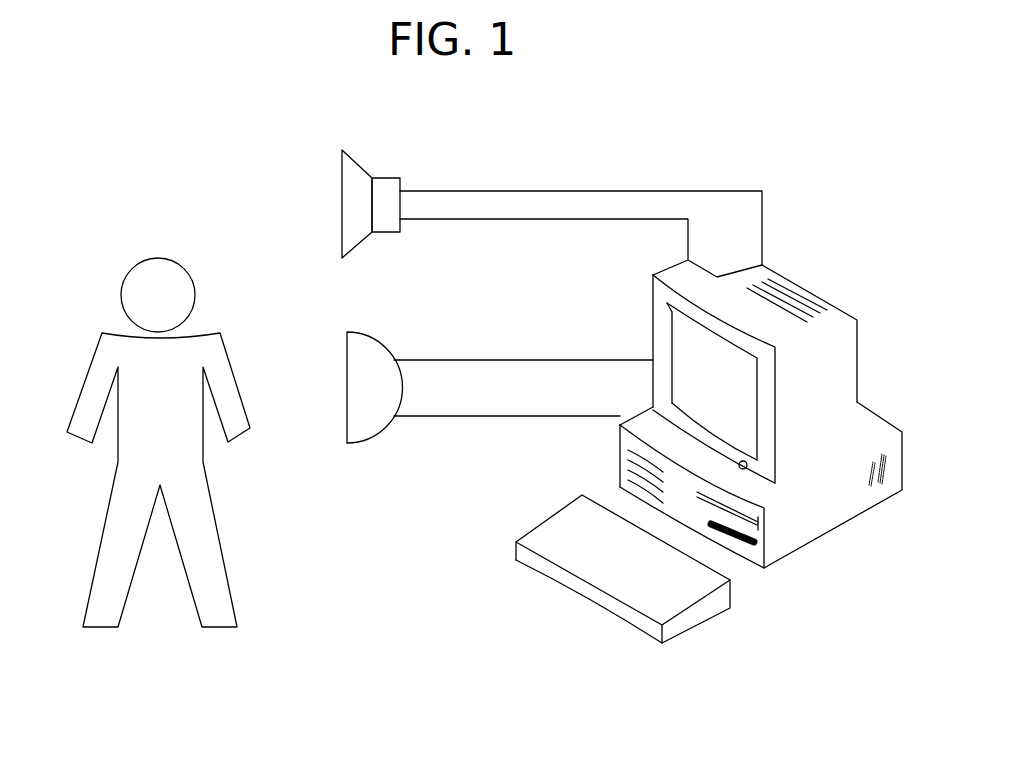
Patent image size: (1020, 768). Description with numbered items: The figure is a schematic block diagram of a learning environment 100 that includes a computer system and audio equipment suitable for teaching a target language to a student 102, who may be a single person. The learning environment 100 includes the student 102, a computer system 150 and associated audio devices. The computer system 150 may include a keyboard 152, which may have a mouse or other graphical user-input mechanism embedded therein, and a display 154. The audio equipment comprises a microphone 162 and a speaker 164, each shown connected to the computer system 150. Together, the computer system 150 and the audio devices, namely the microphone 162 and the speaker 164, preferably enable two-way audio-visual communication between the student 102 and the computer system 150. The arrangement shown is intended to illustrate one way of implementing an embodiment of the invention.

The learning environment 100 is at (120, 187).
The student 102 is at (140, 442).
The computer system 150 is at (761, 414).
The keyboard 152 is at (623, 569).
The display 154 is at (761, 485).
The microphone 162 is at (500, 381).
The speaker 164 is at (552, 204).